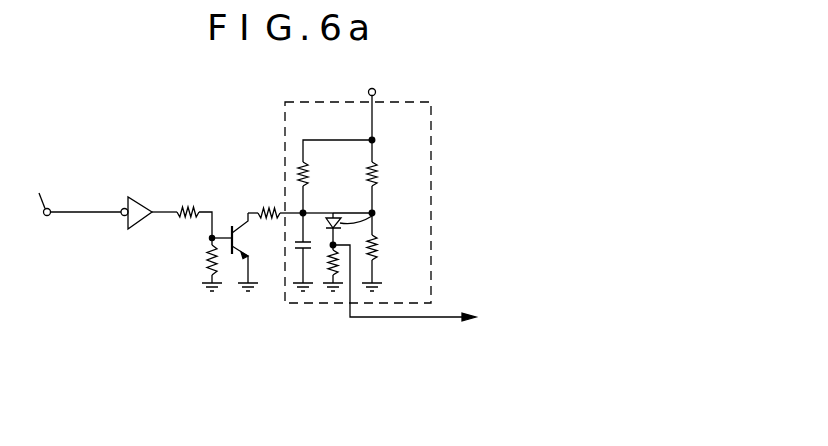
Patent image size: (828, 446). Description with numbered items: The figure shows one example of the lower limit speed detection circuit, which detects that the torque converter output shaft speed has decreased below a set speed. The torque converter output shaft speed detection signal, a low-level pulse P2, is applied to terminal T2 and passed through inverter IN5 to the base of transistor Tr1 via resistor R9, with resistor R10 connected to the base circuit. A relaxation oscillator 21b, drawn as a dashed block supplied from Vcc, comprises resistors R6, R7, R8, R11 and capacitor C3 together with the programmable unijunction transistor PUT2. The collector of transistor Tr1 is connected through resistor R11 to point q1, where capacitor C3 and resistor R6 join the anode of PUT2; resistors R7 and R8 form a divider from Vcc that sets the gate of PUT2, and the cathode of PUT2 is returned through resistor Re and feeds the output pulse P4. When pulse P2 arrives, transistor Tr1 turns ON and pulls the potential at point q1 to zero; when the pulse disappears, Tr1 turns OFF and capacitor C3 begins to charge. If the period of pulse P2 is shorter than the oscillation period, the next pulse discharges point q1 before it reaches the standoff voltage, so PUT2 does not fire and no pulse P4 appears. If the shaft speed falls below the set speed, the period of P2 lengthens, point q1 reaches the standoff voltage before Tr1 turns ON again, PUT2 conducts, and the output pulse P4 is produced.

The terminal T2 is at (47, 196).
The torque converter output shaft speed detection signal pulse P2 is at (86, 229).
The inverter IN5 is at (139, 224).
The resistor R9 is at (195, 214).
The resistor R10 is at (195, 268).
The transistor Tr1 is at (249, 252).
The resistor R11 is at (275, 200).
The capacitor C3 is at (297, 247).
The resistor R6 is at (309, 178).
The point q1 is at (307, 211).
The resistor R7 is at (377, 182).
The programmable unijunction transistor PUT2 is at (379, 229).
The resistor Re is at (328, 262).
The resistor R8 is at (377, 240).
The relaxation oscillator 21b is at (432, 122).
The supply voltage terminal Vcc is at (380, 112).
The output pulse P4 is at (404, 299).